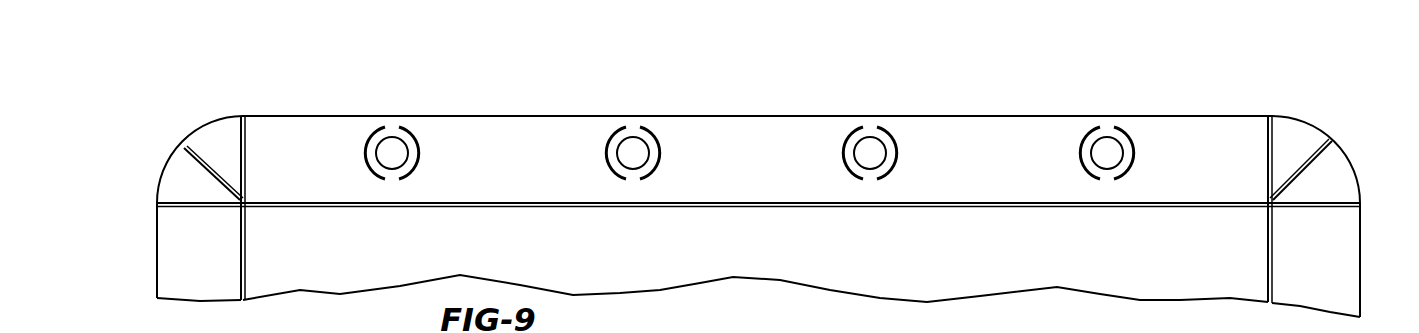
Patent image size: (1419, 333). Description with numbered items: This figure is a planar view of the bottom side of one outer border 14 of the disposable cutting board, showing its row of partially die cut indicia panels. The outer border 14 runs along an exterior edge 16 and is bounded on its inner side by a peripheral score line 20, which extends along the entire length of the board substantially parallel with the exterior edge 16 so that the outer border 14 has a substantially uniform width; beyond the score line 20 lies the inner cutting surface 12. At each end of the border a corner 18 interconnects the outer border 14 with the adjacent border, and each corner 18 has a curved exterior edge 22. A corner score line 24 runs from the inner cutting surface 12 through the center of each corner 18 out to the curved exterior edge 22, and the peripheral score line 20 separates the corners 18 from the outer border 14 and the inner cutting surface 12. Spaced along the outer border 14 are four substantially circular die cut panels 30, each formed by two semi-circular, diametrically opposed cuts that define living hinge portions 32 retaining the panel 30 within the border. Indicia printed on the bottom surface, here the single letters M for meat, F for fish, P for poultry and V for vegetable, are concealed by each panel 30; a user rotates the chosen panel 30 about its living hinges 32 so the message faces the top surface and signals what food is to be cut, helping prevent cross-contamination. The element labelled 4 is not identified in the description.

The end block 4 is at (168, 268).
The inner cutting surface 12 is at (750, 263).
The outer border 14 is at (753, 123).
The exterior edge 16 is at (483, 115).
The corner 18 is at (198, 143).
The peripheral score line 20 is at (250, 243).
The curved exterior edge 22 is at (162, 188).
The corner score line 24 is at (213, 173).
The partially die cut panel 30 is at (370, 147).
The living hinge portion 32 is at (390, 122).